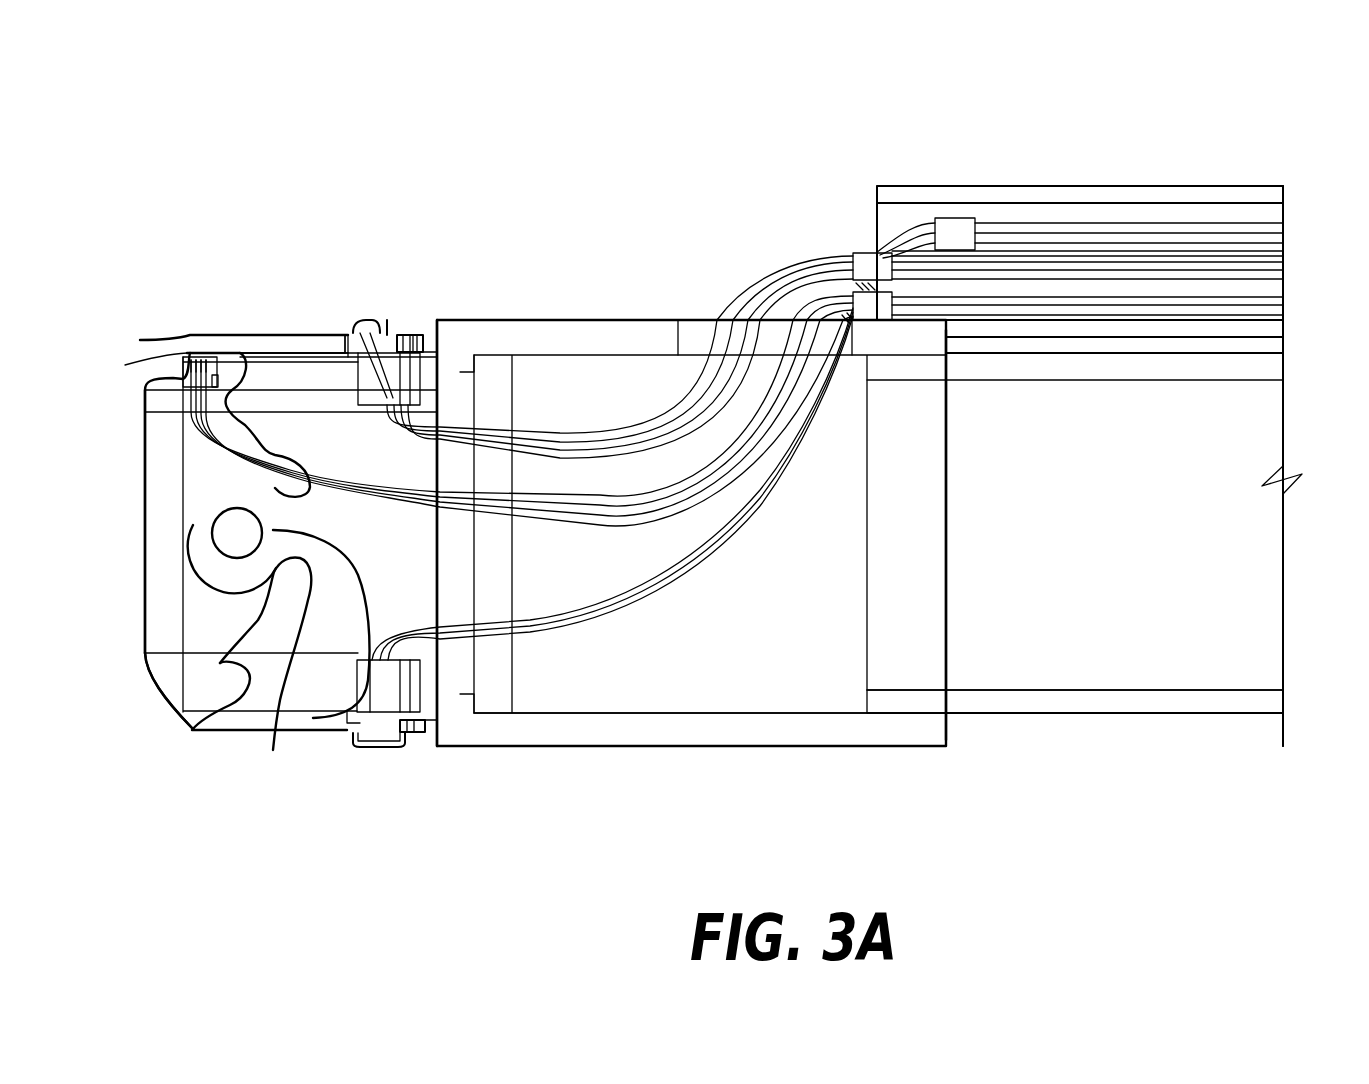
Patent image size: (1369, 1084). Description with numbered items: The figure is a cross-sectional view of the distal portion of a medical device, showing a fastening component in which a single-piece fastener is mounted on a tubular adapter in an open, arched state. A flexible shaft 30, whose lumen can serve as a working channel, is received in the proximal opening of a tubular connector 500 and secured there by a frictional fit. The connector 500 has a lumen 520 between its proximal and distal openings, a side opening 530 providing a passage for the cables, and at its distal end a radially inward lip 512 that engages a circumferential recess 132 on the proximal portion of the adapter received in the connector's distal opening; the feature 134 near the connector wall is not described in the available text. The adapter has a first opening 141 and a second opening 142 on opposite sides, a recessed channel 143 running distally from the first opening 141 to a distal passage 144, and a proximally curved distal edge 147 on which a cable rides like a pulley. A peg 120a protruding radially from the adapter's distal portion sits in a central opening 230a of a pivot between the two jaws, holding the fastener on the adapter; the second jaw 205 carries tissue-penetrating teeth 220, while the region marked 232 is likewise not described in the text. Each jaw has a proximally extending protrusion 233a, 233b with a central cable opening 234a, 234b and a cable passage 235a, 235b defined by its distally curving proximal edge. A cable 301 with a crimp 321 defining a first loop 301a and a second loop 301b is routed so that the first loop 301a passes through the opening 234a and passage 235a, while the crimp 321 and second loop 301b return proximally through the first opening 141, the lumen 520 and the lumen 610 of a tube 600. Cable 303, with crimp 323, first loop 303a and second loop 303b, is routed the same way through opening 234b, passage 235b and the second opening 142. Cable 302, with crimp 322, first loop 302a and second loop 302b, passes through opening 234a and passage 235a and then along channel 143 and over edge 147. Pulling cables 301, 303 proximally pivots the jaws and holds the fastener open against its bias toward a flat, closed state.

The peg 120a is at (225, 525).
The recess 132 is at (458, 330).
The bottom wall 134 is at (548, 697).
The first opening 141 is at (430, 398).
The second opening 142 is at (428, 655).
The channel 143 is at (262, 392).
The distal passage 144 is at (196, 382).
The distal edge 147 is at (200, 372).
The jaw 205 is at (262, 730).
The teeth 220 is at (190, 720).
The central opening 230a is at (275, 695).
The fastener 232 is at (417, 328).
The protrusion 233a is at (427, 323).
The protrusion 233b is at (428, 737).
The cable opening 234a is at (350, 333).
The cable opening 234b is at (350, 725).
The cable passage 235a is at (413, 333).
The cable passage 235b is at (368, 735).
The shaft 30 is at (1040, 715).
The cable 301 is at (806, 250).
The first loop 301a is at (735, 300).
The second loop 301b is at (1265, 255).
The cable 302 is at (783, 380).
The first loop 302a is at (652, 520).
The second loop 302b is at (1250, 320).
The cable 303 is at (720, 557).
The first loop 303a is at (752, 513).
The second loop 303b is at (1000, 215).
The crimp 321 is at (862, 250).
The crimp 322 is at (862, 318).
The crimp 323 is at (952, 215).
The connector 500 is at (768, 748).
The lip 512 is at (475, 358).
The lumen 520 is at (820, 690).
The opening 530 is at (690, 333).
The tube 600 is at (1217, 180).
The lumen 610 is at (1263, 210).